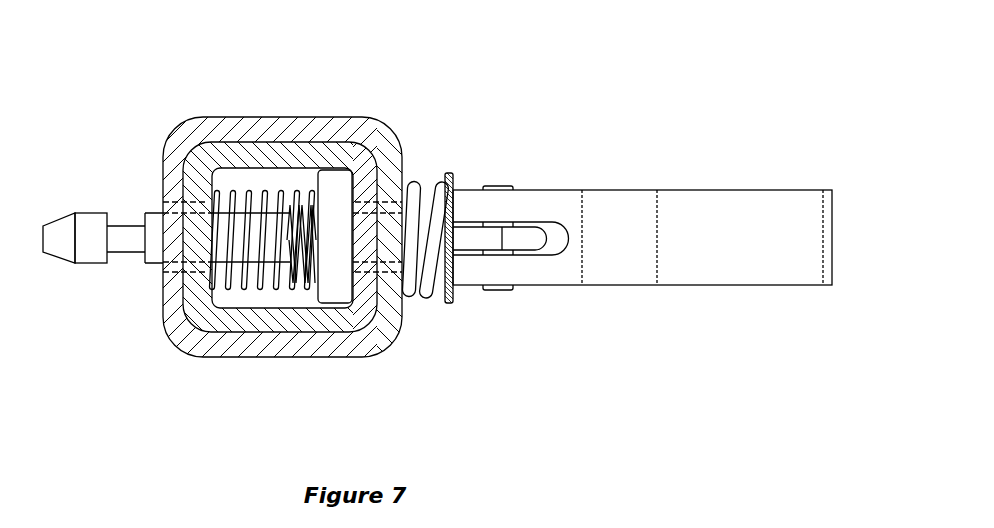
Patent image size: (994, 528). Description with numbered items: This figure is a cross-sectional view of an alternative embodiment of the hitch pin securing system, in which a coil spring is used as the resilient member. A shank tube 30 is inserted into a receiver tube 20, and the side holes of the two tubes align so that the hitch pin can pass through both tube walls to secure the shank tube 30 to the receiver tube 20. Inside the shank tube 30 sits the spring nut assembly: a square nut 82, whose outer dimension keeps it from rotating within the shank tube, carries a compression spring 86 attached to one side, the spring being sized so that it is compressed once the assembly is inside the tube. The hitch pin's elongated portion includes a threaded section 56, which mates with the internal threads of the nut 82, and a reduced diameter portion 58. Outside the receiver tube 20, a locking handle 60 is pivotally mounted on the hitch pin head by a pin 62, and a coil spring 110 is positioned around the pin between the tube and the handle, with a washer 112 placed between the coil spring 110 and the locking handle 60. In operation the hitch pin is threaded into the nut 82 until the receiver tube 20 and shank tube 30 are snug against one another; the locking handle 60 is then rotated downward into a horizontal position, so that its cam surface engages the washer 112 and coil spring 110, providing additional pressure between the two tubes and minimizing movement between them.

The receiver tube 20 is at (348, 123).
The shank tube 30 is at (205, 155).
The threaded section 56 is at (315, 205).
The reduced diameter portion 58 is at (155, 247).
The locking handle 60 is at (714, 183).
The pin 62 is at (500, 185).
The square nut 82 is at (328, 170).
The compression spring 86 is at (242, 188).
The coil spring 110 is at (428, 288).
The washer 112 is at (460, 302).